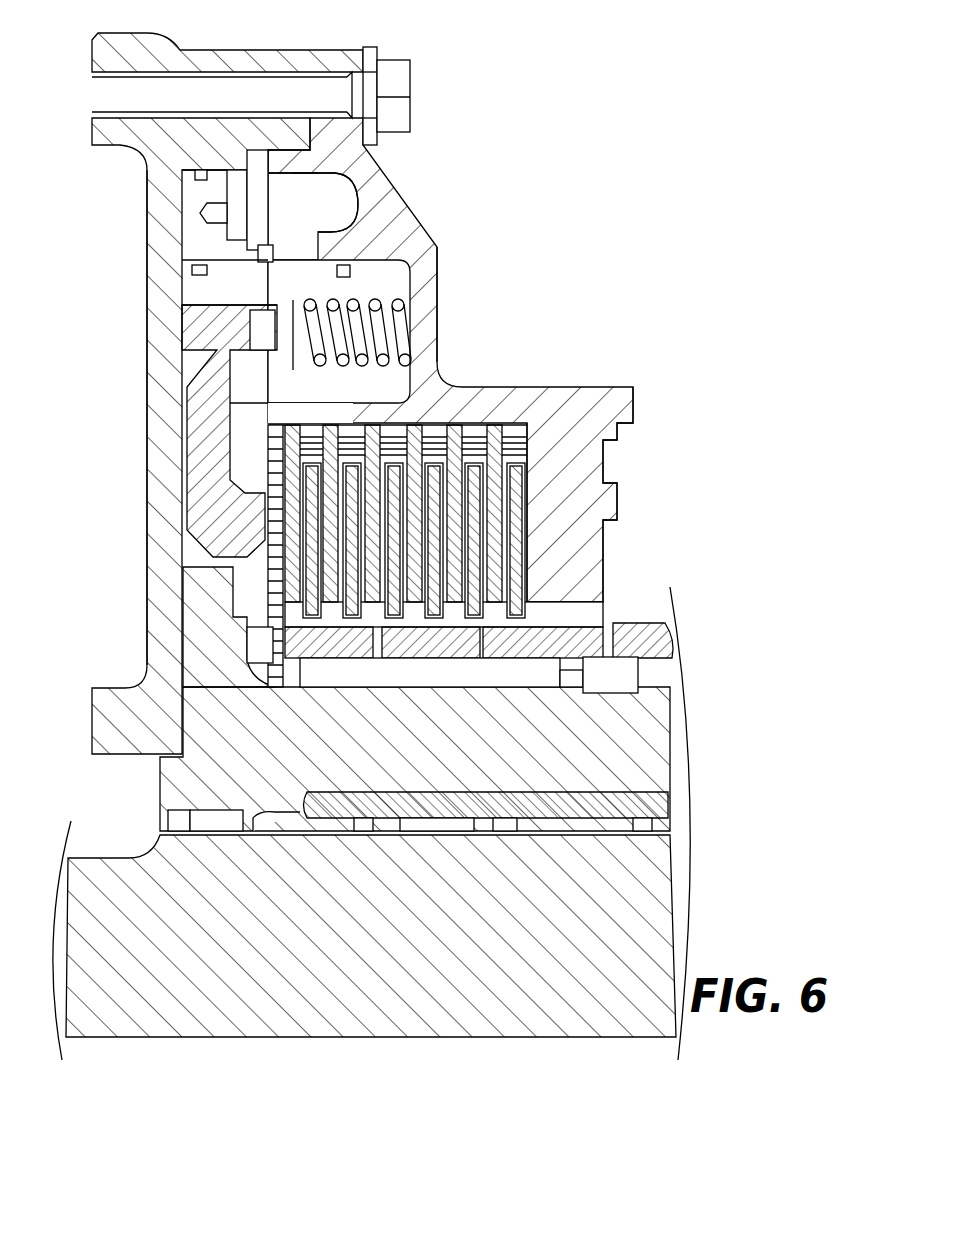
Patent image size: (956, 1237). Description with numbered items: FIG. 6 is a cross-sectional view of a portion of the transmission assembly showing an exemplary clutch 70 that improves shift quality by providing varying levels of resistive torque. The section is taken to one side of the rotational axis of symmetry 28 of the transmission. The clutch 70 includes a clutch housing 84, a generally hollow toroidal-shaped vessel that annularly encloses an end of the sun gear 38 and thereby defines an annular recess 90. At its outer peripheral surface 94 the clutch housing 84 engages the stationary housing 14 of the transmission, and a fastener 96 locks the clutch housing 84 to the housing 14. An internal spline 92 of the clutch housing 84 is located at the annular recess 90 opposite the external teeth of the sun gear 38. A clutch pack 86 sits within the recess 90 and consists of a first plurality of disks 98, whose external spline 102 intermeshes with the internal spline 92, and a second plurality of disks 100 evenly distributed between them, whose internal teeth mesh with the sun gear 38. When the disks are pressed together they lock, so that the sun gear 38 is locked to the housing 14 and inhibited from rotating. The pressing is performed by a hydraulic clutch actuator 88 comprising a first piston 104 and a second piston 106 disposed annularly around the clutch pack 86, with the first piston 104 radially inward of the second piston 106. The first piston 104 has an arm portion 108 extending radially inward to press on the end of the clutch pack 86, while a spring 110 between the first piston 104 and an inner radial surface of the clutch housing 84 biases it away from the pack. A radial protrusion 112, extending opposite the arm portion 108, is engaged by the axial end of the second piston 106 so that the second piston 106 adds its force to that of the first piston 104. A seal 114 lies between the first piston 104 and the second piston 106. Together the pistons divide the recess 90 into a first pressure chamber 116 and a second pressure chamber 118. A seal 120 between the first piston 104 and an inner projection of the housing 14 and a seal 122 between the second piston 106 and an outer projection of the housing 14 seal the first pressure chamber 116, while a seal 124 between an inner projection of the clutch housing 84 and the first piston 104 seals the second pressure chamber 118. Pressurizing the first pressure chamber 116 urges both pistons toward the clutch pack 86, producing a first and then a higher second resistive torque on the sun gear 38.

The housing 14 is at (245, 60).
The outer peripheral surface 94 is at (347, 50).
The fastener 96 is at (400, 79).
The seal 122 is at (203, 168).
The annular recess 90 is at (293, 173).
The clutch actuator 88 is at (404, 282).
The first pressure chamber 116 is at (182, 232).
The second pressure chamber 118 is at (288, 208).
The clutch housing 84 is at (371, 231).
The clutch 70 is at (622, 262).
The second piston 106 is at (186, 254).
The radial protrusion 112 is at (275, 255).
The seal 114 is at (206, 276).
The first piston 104 is at (248, 293).
The seal 124 is at (337, 272).
The spring 110 is at (380, 320).
The seal 120 is at (250, 320).
The first plurality of disks 98 is at (290, 418).
The arm portion 108 is at (189, 454).
The external spline 102 is at (268, 437).
The clutch pack 86 is at (476, 423).
The internal spline 92 is at (516, 425).
The sun gear 38 is at (632, 622).
The second plurality of disks 100 is at (315, 600).
The rotational axis of symmetry 28 is at (400, 1030).